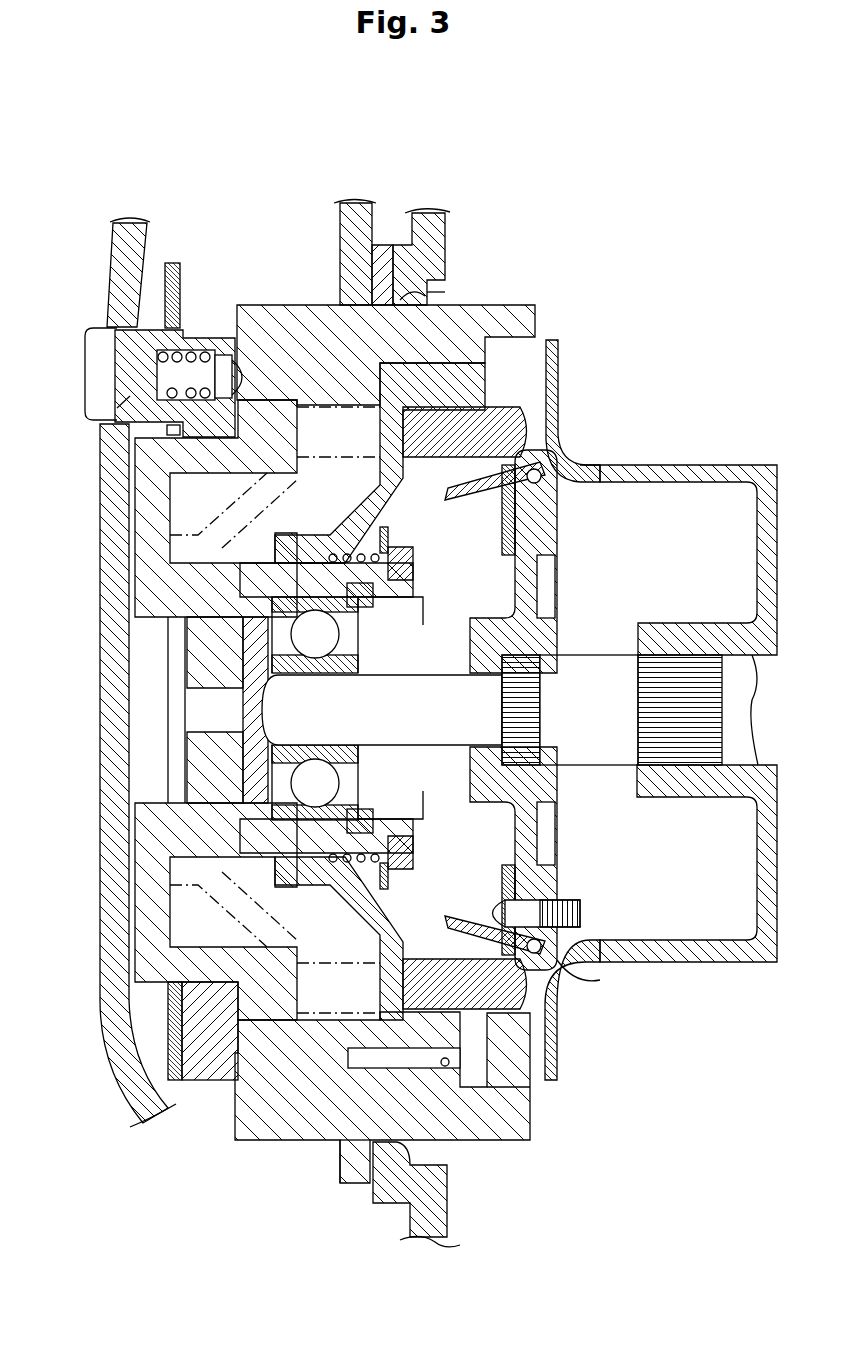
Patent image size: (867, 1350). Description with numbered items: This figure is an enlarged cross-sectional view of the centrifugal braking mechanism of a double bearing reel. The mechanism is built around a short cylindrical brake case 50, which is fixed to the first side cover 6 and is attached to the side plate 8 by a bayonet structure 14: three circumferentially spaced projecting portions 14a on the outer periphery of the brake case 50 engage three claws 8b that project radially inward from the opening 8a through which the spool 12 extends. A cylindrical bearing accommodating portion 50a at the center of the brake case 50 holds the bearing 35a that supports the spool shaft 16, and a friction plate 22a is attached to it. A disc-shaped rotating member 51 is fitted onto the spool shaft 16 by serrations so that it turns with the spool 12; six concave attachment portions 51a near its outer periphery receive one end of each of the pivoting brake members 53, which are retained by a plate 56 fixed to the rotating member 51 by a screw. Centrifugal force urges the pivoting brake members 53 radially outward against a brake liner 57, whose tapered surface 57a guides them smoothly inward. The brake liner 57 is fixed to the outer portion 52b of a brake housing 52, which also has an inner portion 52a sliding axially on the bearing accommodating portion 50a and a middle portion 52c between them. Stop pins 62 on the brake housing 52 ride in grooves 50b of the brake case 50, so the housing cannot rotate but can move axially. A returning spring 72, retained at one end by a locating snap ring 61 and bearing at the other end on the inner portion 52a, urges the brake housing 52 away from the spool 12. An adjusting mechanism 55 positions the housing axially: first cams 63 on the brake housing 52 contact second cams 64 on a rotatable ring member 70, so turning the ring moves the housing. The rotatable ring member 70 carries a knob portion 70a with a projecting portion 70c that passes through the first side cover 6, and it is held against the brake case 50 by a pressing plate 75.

The first side cover 6 is at (117, 1043).
The side plate 8 is at (439, 263).
The opening 8a is at (444, 290).
The claws 8b is at (354, 288).
The spool 12 is at (734, 476).
The bayonet structure 14 is at (504, 301).
The projecting portions 14a is at (412, 295).
The spool shaft 16 is at (606, 680).
The friction plate 22a is at (251, 720).
The bearing 35a is at (354, 671).
The brake case 50 is at (544, 321).
The bearing accommodating portion 50a is at (454, 603).
The grooves 50b is at (454, 1098).
The rotating member 51 is at (551, 504).
The concave attachment portions 51a is at (569, 978).
The brake housing 52 is at (471, 384).
The inner portion 52a is at (297, 543).
The outer portion 52b is at (344, 1038).
The middle portion 52c is at (299, 1058).
The pivoting brake members 53 is at (526, 428).
The adjusting mechanism 55 is at (209, 443).
The plate 56 is at (521, 883).
The brake liner 57 is at (554, 453).
The tapered surface 57a is at (559, 1038).
The locating snap ring 61 is at (394, 546).
The stop pins 62 is at (479, 1103).
The first cams 63 is at (359, 1038).
The second cams 64 is at (234, 1108).
The rotatable ring member 70 is at (206, 340).
The knob portion 70a is at (127, 405).
The projecting portion 70c is at (92, 353).
The returning spring 72 is at (384, 820).
The pressing plate 75 is at (172, 262).